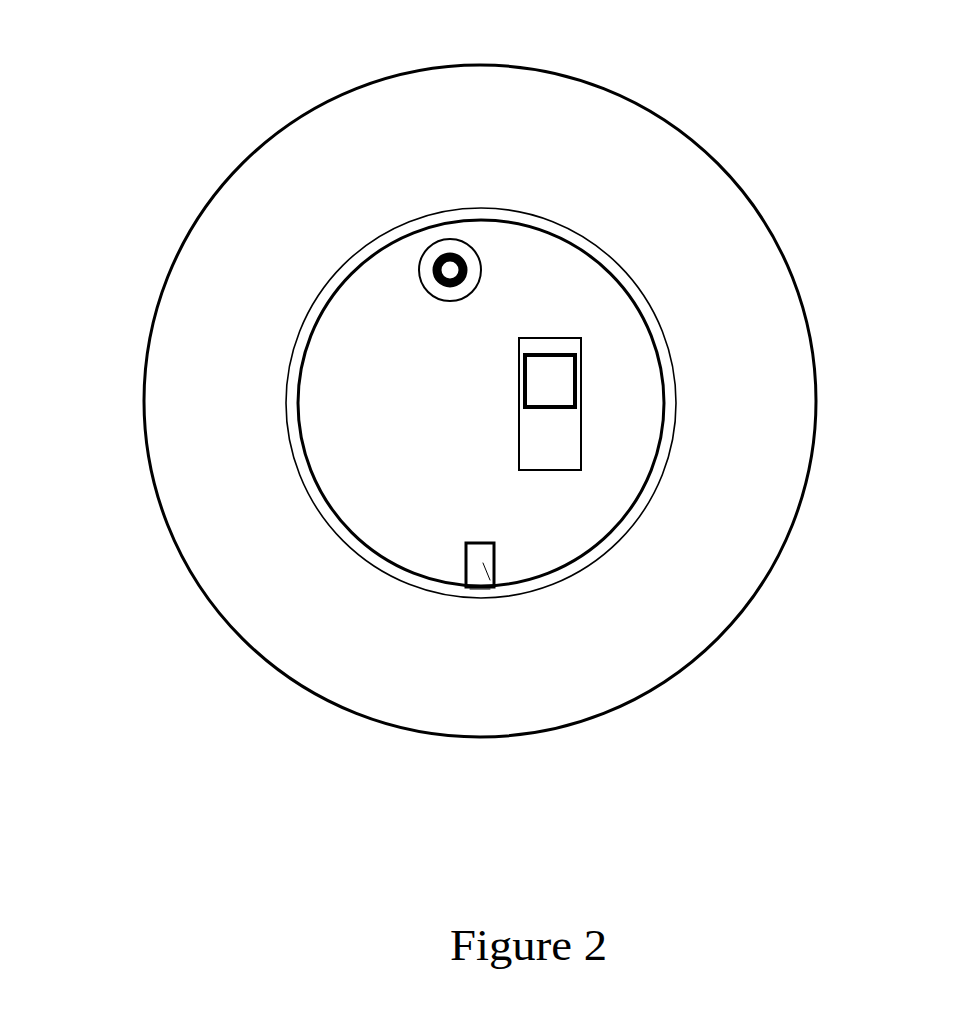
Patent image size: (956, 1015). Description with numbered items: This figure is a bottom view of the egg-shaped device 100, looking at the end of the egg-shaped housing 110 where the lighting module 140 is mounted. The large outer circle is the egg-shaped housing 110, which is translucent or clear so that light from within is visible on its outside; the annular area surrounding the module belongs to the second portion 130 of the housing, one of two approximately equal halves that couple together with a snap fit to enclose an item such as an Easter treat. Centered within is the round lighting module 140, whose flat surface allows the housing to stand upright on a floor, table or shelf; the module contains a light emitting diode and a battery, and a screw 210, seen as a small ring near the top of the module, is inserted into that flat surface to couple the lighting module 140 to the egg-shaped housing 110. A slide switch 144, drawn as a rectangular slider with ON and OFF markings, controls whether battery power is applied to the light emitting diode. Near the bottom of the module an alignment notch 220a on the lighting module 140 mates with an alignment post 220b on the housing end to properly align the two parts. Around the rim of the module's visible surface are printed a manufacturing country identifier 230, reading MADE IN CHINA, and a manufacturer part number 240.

The egg-shaped device 100 is at (213, 54).
The egg-shaped housing 110 is at (256, 147).
The second portion 130 is at (205, 516).
The lighting module 140 is at (290, 353).
The switch 144 is at (568, 415).
The screw 210 is at (476, 255).
The alignment notch 220a is at (497, 570).
The alignment post 220b is at (502, 602).
The manufacturing country identifier 230 is at (632, 327).
The manufacturer part number 240 is at (315, 425).